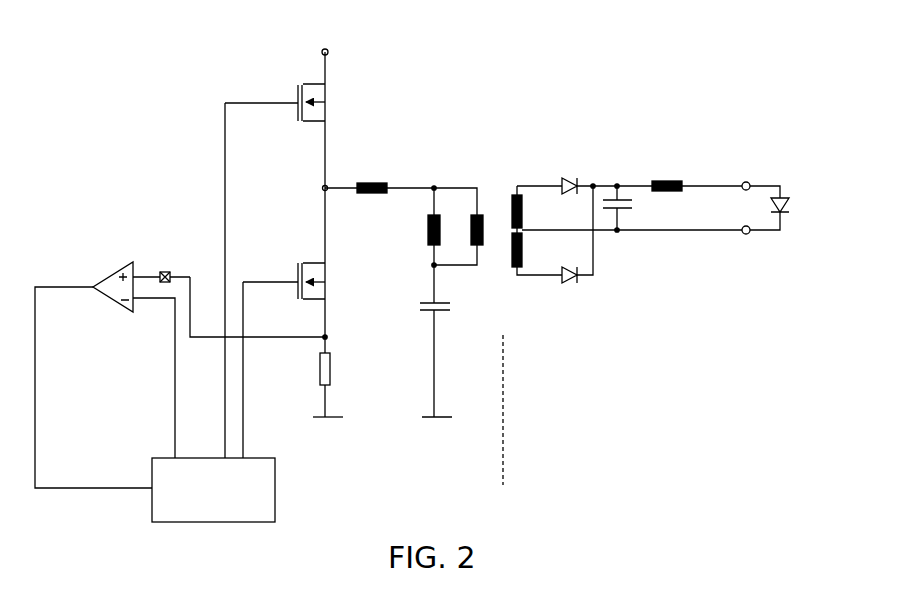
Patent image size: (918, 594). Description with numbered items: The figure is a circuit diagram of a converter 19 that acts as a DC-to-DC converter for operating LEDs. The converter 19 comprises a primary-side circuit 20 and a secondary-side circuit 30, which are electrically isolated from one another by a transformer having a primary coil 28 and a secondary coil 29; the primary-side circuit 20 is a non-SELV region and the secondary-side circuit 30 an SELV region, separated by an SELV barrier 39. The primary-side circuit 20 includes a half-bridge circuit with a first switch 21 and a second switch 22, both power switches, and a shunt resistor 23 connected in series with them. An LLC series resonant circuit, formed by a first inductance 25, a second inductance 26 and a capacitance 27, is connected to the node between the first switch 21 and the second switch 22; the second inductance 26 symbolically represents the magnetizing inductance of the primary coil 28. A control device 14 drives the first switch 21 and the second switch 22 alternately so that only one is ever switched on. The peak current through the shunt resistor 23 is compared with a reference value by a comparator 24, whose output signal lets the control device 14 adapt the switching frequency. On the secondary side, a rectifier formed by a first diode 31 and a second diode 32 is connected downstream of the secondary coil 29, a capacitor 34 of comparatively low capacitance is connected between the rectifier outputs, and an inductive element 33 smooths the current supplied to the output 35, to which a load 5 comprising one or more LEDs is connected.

The converter 19 is at (108, 52).
The primary-side circuit 20 is at (235, 78).
The first switch 21 is at (297, 85).
The second switch 22 is at (297, 263).
The shunt resistor 23 is at (320, 368).
The comparator 24 is at (118, 268).
The control device 14 is at (213, 490).
The first inductance 25 is at (378, 181).
The second inductance 26 is at (426, 233).
The capacitance 27 is at (420, 302).
The primary coil 28 is at (484, 254).
The secondary coil 29 is at (510, 190).
The secondary-side circuit 30 is at (525, 70).
The first diode 31 is at (570, 177).
The second diode 32 is at (572, 285).
The inductive element 33 is at (675, 180).
The capacitor 34 is at (632, 206).
The output 35 is at (748, 181).
The load 5 is at (788, 198).
The SELV barrier 39 is at (505, 475).